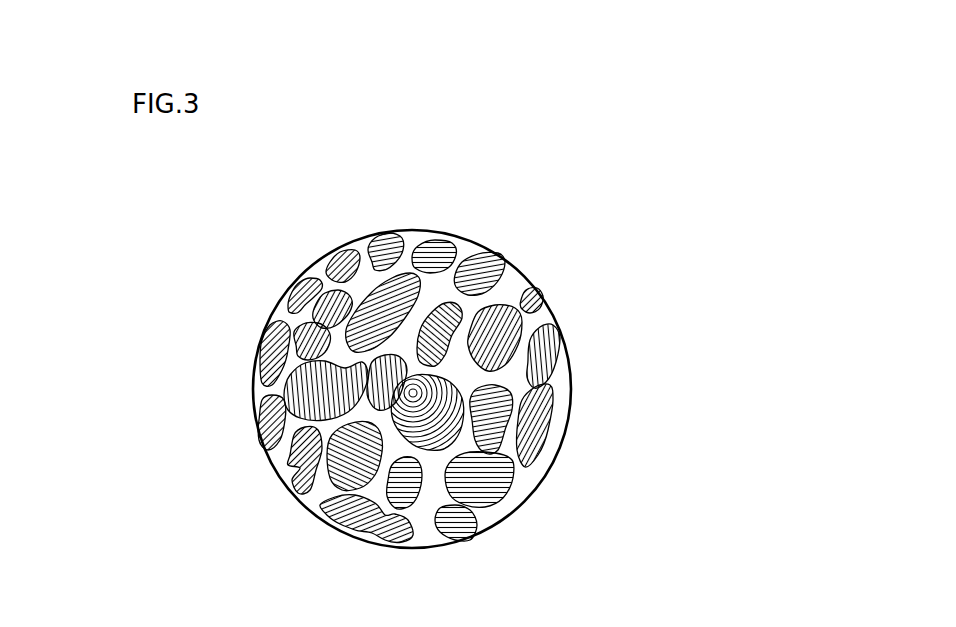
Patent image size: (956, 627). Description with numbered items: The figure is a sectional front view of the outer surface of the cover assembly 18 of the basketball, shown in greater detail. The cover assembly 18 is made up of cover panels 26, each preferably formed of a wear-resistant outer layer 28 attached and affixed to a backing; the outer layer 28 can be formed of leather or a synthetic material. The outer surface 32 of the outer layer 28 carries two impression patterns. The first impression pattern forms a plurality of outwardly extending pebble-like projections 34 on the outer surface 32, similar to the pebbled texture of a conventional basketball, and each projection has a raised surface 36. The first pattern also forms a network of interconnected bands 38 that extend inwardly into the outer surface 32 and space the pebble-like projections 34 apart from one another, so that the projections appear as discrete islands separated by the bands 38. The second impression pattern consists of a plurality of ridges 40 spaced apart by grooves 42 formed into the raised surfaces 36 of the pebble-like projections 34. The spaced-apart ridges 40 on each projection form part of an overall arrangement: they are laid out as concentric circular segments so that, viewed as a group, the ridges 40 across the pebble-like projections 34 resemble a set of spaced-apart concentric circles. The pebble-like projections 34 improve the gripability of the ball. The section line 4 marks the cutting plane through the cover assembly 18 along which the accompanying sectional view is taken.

The cover assembly 18 is at (205, 252).
The cover panels 26 is at (572, 162).
The outer layer 28 is at (415, 240).
The outer surface 32 is at (282, 455).
The pebble-like projections 34 is at (273, 360).
The raised surfaces 36 is at (337, 262).
The interconnected bands 38 is at (325, 497).
The ridges 40 is at (390, 537).
The grooves 42 is at (455, 535).
The section line 4- 4 is at (398, 392).